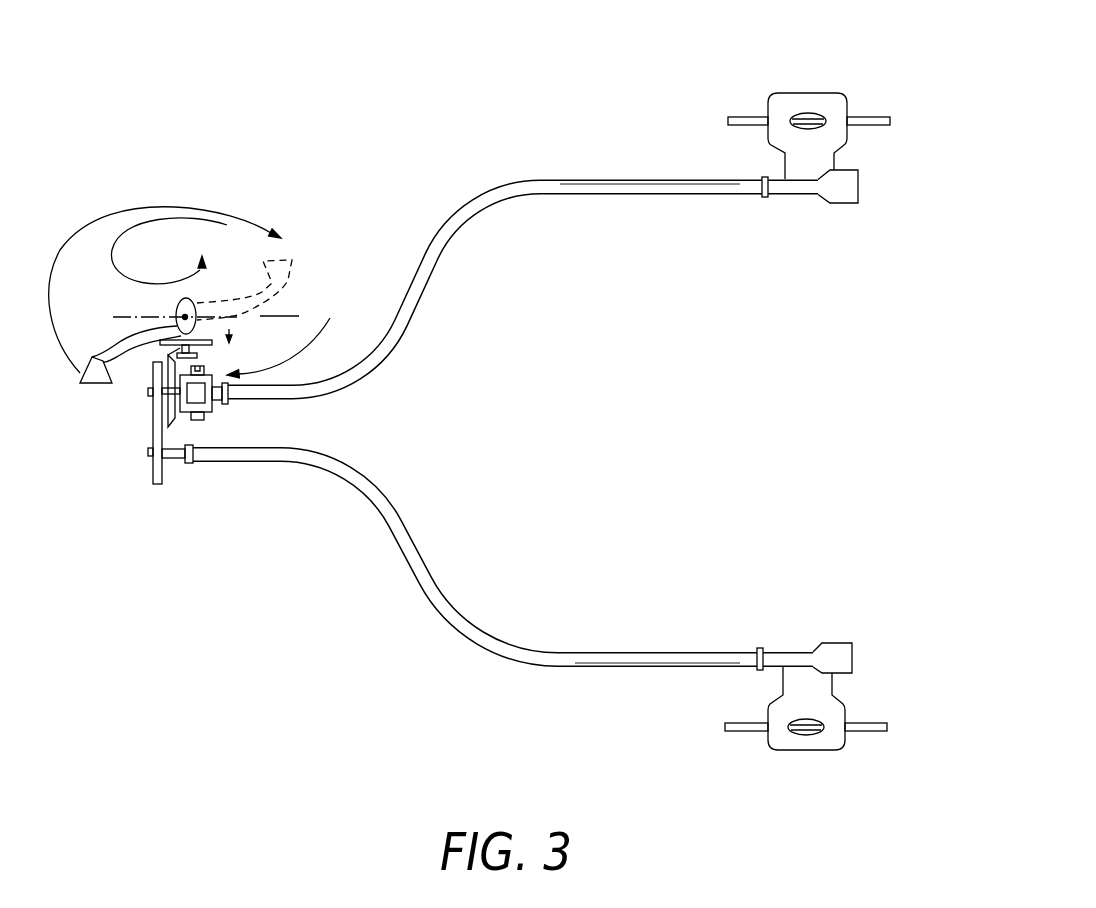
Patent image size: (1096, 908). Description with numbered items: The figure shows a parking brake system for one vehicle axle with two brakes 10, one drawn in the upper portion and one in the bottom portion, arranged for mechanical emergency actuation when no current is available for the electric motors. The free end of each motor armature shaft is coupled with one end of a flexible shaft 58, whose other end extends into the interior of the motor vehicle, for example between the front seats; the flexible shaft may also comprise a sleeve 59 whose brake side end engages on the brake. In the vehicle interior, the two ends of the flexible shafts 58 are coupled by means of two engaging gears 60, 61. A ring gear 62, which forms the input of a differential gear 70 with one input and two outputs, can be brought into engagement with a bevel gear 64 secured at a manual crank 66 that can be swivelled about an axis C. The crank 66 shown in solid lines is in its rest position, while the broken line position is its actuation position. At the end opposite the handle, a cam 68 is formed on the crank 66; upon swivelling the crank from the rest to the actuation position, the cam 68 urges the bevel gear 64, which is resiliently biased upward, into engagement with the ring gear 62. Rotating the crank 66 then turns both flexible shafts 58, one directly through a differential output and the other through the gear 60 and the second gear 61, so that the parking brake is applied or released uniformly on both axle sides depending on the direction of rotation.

The brake 10 is at (750, 95).
The flexible shaft 58 is at (610, 190).
The sleeve 59 is at (563, 668).
The gear 60 is at (158, 406).
The second gear 61 is at (157, 485).
The ring gear 62 is at (190, 419).
The bevel gear 64 is at (190, 350).
The manual crank 66 is at (153, 326).
The cam 68 is at (203, 298).
The differential gear 70 is at (298, 337).
The axis C is at (297, 315).